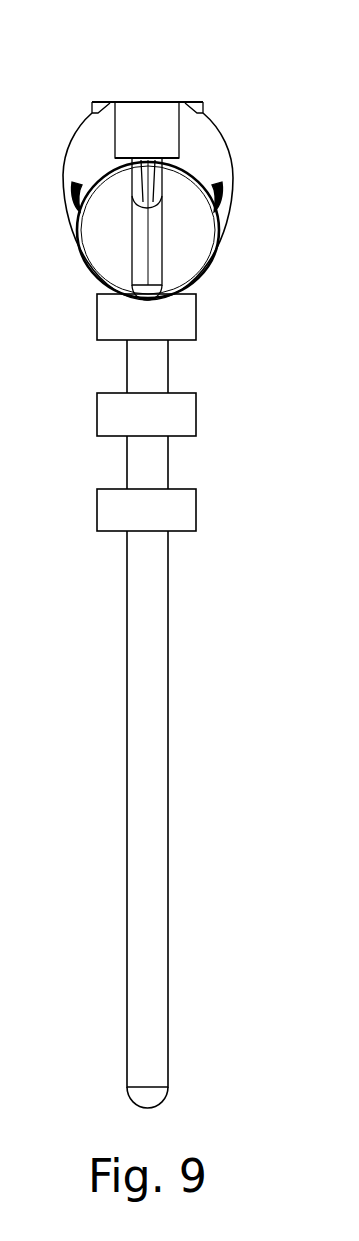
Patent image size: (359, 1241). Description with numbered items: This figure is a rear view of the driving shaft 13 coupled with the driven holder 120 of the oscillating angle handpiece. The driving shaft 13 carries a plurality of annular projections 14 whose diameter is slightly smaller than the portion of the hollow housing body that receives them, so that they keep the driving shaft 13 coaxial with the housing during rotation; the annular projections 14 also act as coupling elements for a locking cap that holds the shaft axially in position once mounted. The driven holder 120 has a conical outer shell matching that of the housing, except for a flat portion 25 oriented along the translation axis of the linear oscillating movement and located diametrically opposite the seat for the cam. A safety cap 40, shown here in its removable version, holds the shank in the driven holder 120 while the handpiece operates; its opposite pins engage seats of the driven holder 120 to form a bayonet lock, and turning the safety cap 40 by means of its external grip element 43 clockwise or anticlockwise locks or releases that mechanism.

The driving shaft 13 is at (168, 823).
The annular projections 14 is at (196, 317).
The flat portion 25 is at (147, 122).
The safety cap 40 is at (172, 246).
The external grip element 43 is at (138, 250).
The driven holder 120 is at (217, 158).